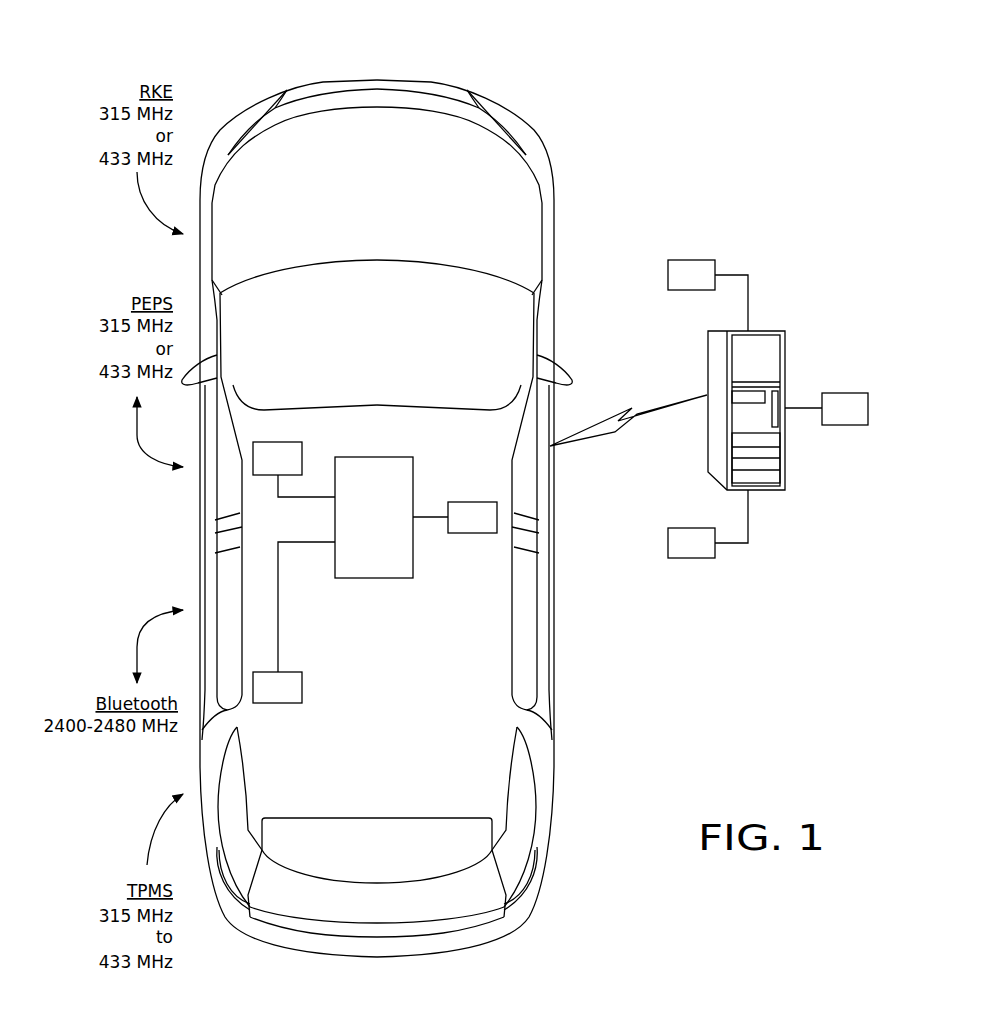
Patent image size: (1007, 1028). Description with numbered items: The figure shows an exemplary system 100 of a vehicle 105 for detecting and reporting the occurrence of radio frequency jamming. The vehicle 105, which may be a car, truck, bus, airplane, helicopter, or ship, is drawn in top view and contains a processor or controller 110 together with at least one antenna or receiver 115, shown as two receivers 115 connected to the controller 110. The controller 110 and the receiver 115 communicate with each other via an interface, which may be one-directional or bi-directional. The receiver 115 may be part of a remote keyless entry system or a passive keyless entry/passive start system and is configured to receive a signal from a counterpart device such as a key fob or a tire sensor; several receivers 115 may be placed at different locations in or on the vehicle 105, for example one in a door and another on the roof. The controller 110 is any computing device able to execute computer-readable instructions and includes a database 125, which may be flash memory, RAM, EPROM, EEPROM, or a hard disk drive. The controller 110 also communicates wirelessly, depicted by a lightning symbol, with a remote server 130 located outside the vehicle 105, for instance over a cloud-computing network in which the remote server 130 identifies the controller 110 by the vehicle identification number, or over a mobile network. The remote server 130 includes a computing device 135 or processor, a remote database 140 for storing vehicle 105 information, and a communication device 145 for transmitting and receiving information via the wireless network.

The system 100 is at (512, 52).
The vehicle 105 is at (548, 163).
The controller 110 is at (374, 517).
The receiver 115 is at (294, 572).
The database 125 is at (455, 517).
The remote server 130 is at (784, 352).
The computing device 135 is at (708, 295).
The remote database 140 is at (826, 409).
The communication device 145 is at (708, 524).